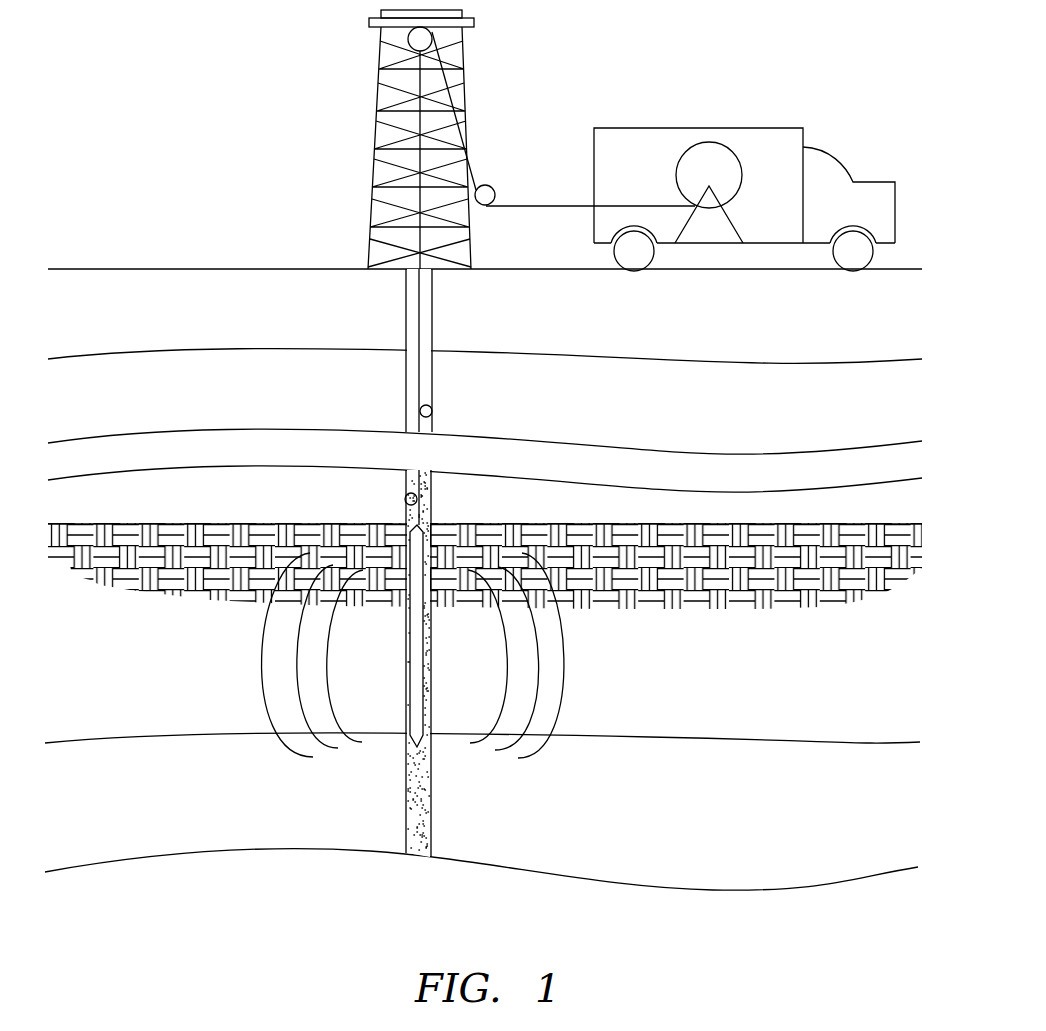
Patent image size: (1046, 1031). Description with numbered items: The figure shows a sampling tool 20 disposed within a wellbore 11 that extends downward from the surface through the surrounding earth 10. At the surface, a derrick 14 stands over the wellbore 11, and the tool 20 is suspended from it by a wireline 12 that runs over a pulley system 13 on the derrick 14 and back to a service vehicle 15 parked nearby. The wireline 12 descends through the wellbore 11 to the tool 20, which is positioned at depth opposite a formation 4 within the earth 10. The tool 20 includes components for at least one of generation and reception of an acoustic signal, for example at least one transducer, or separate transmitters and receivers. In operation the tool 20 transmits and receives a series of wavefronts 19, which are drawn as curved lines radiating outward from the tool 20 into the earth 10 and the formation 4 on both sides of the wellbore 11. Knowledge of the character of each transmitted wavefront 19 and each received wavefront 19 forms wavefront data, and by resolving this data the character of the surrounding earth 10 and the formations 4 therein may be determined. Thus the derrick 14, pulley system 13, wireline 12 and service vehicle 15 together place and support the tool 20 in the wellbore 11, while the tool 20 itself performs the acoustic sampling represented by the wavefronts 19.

The formations 4 is at (847, 573).
The surrounding earth 10 is at (697, 418).
The wellbore 11 is at (428, 379).
The wireline 12 is at (431, 412).
The pulley system 13 is at (417, 39).
The derrick 14 is at (370, 210).
The service vehicle 15 is at (764, 131).
The wavefronts 19 is at (548, 651).
The tool 20 is at (418, 715).